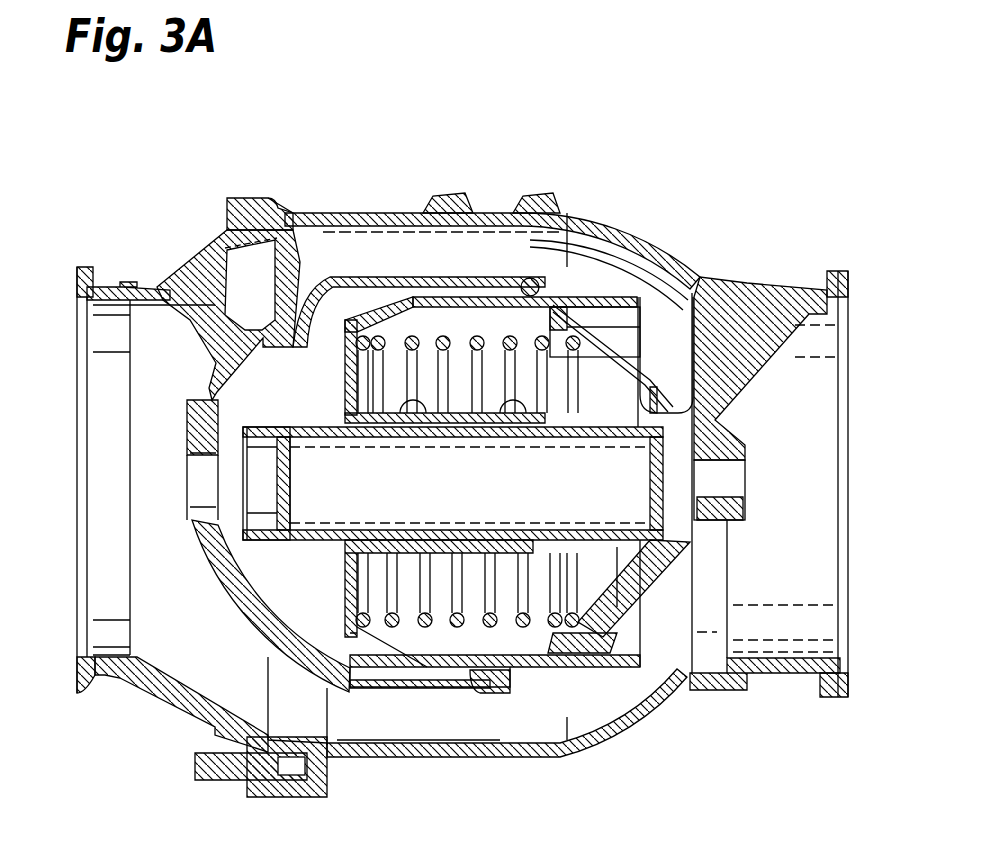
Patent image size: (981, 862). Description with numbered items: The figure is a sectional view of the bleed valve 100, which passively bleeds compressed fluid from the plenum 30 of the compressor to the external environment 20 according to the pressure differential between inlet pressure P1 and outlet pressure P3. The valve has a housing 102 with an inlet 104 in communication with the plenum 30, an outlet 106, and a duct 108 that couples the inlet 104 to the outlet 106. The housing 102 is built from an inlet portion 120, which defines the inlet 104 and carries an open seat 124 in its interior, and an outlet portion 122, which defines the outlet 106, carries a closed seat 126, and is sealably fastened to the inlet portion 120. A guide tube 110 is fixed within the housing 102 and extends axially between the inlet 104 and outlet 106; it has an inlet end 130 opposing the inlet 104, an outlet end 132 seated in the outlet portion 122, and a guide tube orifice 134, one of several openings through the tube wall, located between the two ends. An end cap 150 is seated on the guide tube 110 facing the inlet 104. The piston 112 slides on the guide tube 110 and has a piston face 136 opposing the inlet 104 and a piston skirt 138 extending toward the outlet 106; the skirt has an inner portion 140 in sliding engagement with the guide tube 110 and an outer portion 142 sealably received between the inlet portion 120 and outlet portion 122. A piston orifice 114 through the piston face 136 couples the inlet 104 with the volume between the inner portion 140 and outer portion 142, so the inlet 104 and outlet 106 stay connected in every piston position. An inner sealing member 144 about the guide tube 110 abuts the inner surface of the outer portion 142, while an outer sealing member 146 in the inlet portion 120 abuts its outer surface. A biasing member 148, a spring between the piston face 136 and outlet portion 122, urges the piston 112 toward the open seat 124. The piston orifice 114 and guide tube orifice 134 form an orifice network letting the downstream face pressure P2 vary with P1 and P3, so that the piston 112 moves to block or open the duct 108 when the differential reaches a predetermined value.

The bleed valve 100 is at (155, 118).
The housing 102 is at (364, 203).
The inlet 104 is at (137, 382).
The outlet 106 is at (768, 427).
The duct 108 is at (404, 732).
The guide tube 110 is at (591, 421).
The piston 112 is at (337, 617).
The piston orifice 114 is at (347, 400).
The inlet portion 120 is at (187, 292).
The outlet portion 122 is at (660, 245).
The open seat 124 is at (317, 292).
The closed seat 126 is at (707, 297).
The inlet end 130 is at (273, 549).
The outlet end 132 is at (652, 518).
The guide tube orifice 134 is at (620, 585).
The piston face 136 is at (390, 330).
The piston skirt 138 is at (433, 295).
The inner portion 140 is at (532, 400).
The outer portion 142 is at (617, 295).
The inner sealing member 144 is at (567, 267).
The outer sealing member 146 is at (533, 280).
The biasing member 148 is at (500, 347).
The end cap 150 is at (293, 517).
The external environment 20 is at (901, 448).
The plenum 30 is at (25, 505).
The inlet pressure P1 is at (235, 492).
The downstream face pressure P2 is at (470, 593).
The outlet pressure P3 is at (760, 543).